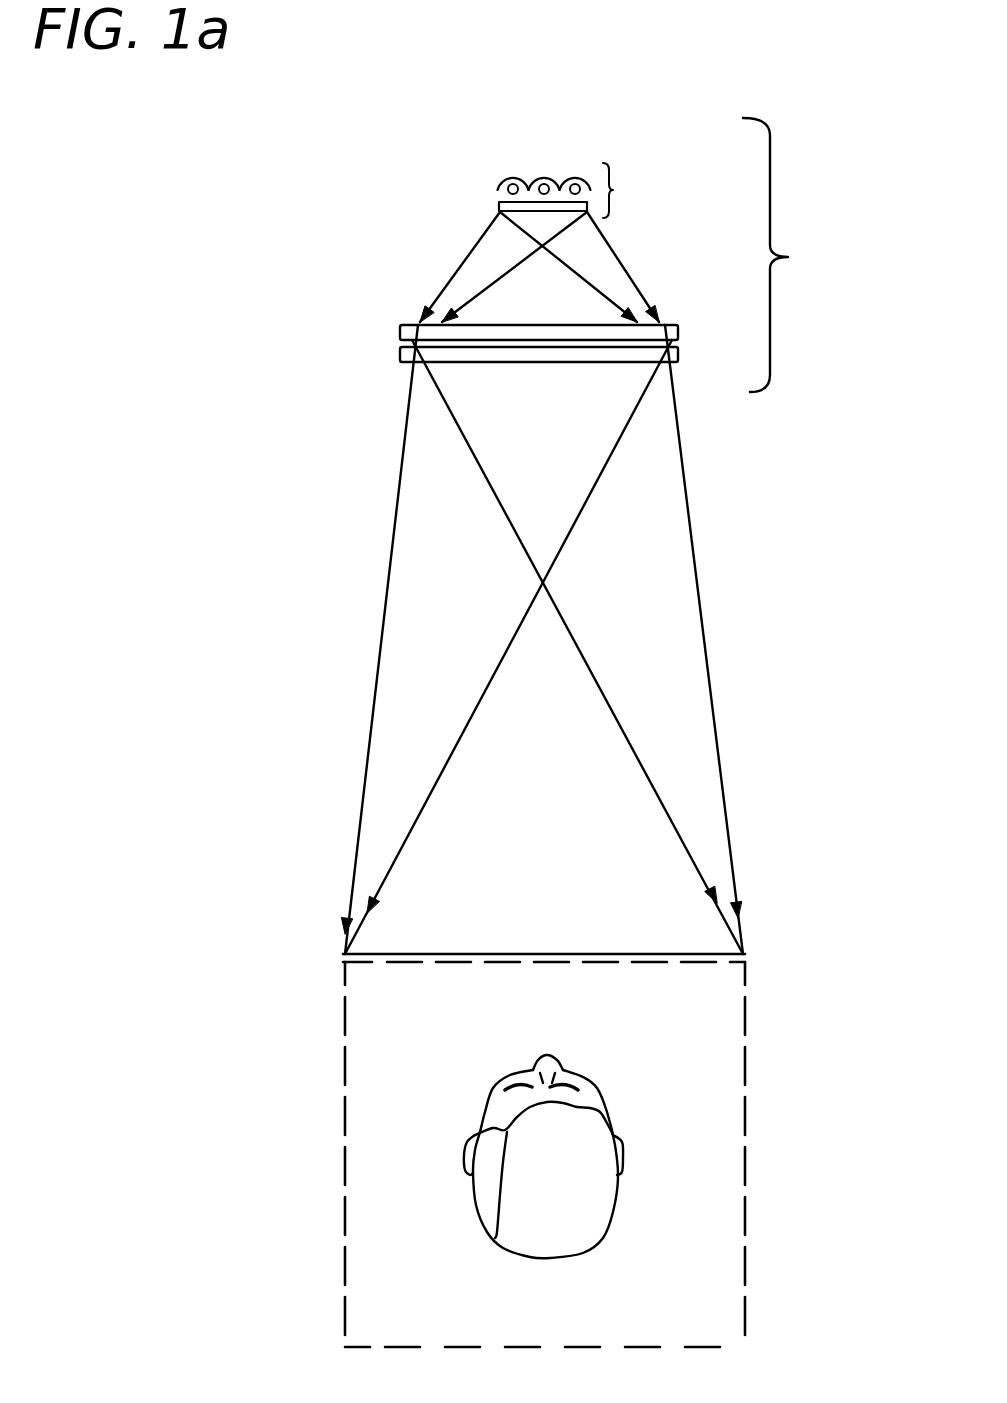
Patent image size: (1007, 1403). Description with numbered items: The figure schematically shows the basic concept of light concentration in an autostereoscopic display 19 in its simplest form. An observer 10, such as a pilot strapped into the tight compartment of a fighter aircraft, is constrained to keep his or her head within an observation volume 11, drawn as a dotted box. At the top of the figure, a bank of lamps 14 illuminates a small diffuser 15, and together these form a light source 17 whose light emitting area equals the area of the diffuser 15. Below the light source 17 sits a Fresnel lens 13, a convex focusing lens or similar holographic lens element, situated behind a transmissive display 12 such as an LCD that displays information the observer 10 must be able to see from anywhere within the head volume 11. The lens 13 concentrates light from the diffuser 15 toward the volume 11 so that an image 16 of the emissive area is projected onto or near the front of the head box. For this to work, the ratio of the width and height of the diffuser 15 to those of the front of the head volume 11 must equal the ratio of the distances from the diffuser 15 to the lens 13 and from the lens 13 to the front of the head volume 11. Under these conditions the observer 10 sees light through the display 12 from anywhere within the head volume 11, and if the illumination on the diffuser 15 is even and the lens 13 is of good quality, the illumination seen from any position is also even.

The observer 10 is at (500, 1240).
The observation volume 11 is at (343, 1130).
The transmissive display 12 is at (398, 357).
The Fresnel lens 13 is at (405, 328).
The bank of lamps 14 is at (546, 173).
The diffuser 15 is at (499, 208).
The image 16 is at (587, 950).
The light source 17 is at (634, 190).
The autostereoscopic display 19 is at (801, 255).